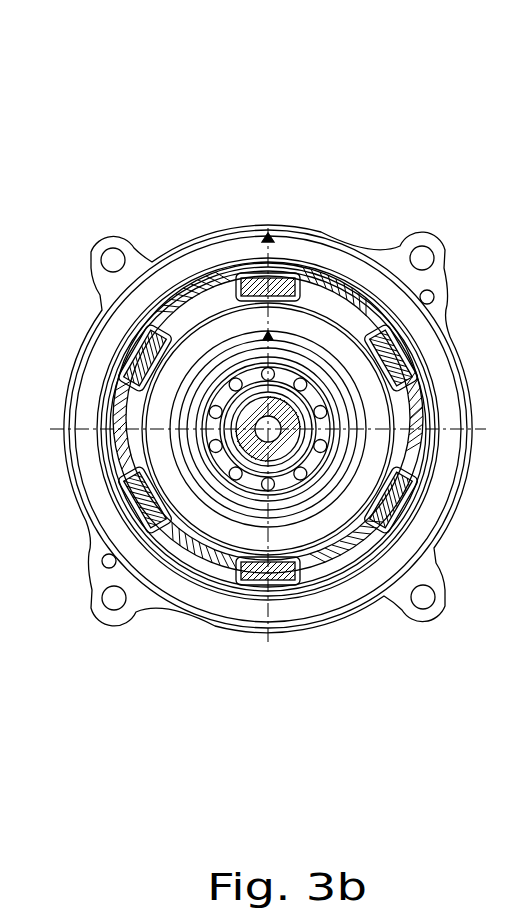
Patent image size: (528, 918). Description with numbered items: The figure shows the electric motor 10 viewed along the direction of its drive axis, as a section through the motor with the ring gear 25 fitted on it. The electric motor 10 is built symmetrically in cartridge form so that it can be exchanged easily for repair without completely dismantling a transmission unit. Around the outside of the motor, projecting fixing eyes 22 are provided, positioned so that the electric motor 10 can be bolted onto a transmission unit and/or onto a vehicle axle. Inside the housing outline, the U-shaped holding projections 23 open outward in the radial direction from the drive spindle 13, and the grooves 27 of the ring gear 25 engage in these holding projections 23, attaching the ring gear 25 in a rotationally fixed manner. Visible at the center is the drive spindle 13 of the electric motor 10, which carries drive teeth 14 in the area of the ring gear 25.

The electric motor 10 is at (405, 635).
The drive spindle 13 is at (414, 316).
The drive teeth 14 is at (300, 463).
The fixing eyes 22 is at (113, 258).
The holding projections 23 is at (265, 272).
The ring gear 25 is at (308, 553).
The grooves 27 is at (372, 325).